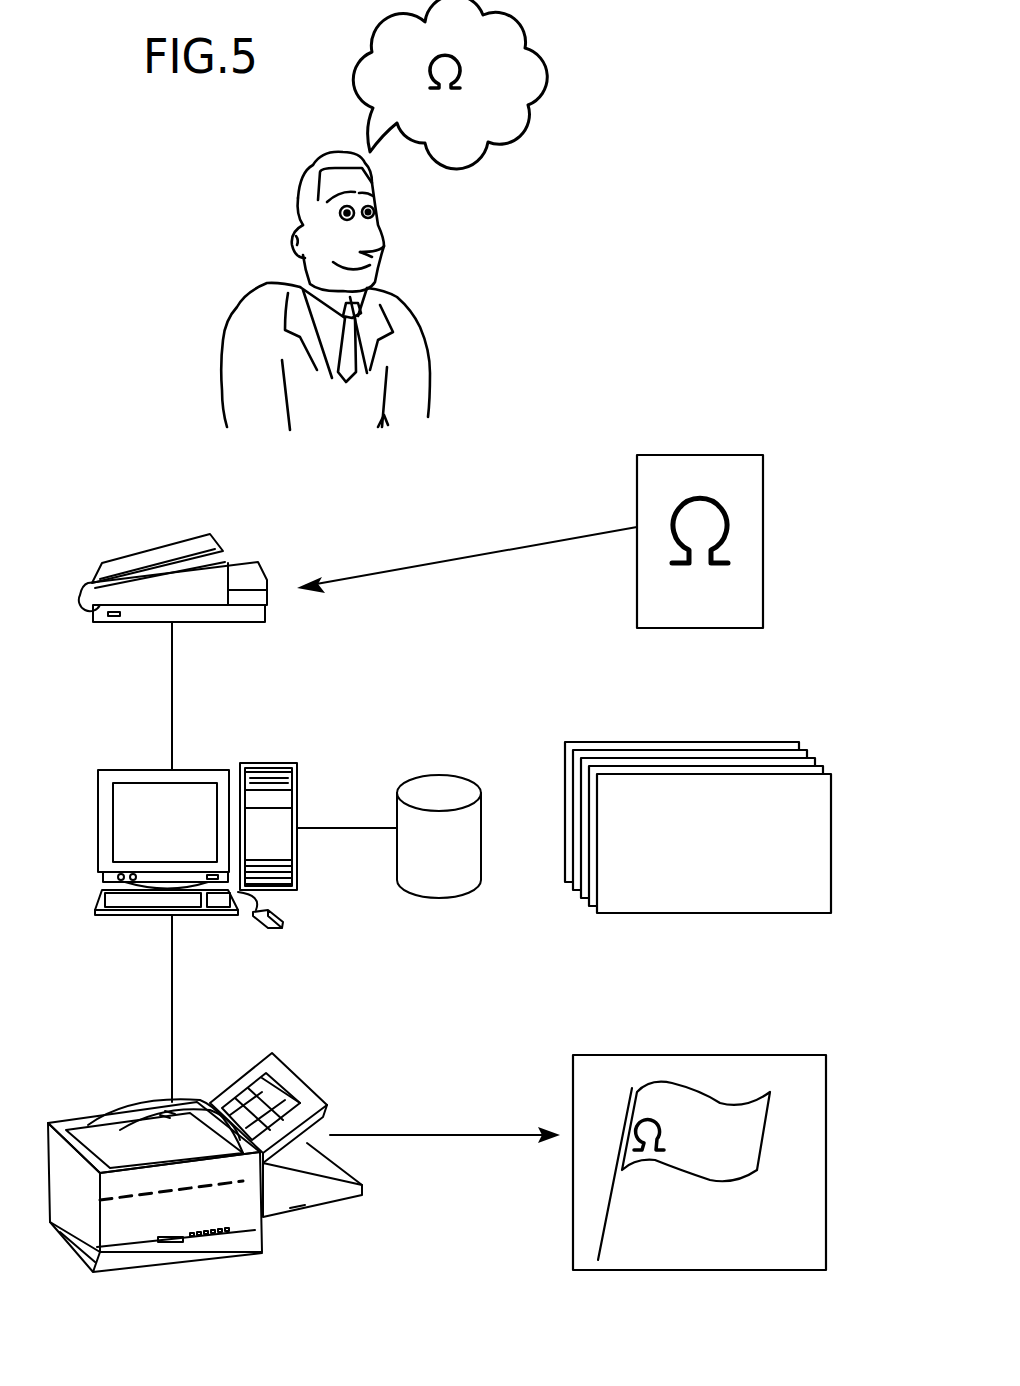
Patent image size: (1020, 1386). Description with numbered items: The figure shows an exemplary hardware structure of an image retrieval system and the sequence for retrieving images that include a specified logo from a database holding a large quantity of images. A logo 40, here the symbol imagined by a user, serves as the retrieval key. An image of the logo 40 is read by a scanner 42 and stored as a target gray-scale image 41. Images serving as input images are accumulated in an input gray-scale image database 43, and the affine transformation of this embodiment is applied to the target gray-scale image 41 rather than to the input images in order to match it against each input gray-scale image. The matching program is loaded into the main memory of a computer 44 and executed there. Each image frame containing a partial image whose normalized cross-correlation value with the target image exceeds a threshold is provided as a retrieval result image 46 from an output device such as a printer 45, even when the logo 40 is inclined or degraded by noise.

The logo 40 is at (533, 97).
The target gray-scale image 41 is at (763, 503).
The scanner 42 is at (256, 566).
The input gray-scale image database 43 is at (790, 742).
The computer 44 is at (268, 763).
The printer 45 is at (285, 1062).
The retrieval result image 46 is at (780, 1055).